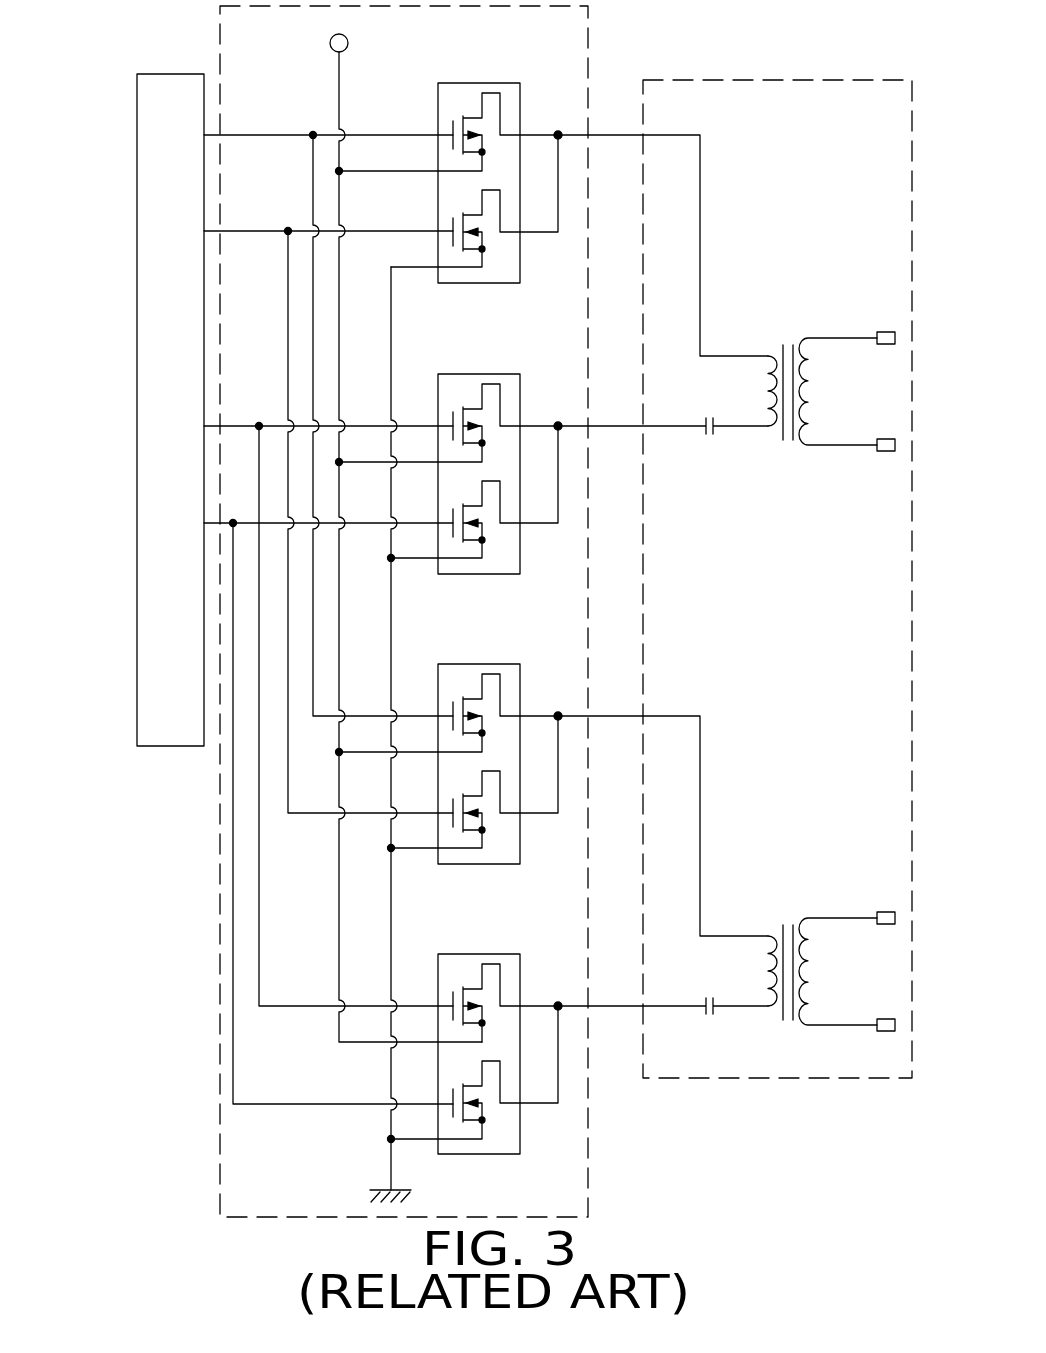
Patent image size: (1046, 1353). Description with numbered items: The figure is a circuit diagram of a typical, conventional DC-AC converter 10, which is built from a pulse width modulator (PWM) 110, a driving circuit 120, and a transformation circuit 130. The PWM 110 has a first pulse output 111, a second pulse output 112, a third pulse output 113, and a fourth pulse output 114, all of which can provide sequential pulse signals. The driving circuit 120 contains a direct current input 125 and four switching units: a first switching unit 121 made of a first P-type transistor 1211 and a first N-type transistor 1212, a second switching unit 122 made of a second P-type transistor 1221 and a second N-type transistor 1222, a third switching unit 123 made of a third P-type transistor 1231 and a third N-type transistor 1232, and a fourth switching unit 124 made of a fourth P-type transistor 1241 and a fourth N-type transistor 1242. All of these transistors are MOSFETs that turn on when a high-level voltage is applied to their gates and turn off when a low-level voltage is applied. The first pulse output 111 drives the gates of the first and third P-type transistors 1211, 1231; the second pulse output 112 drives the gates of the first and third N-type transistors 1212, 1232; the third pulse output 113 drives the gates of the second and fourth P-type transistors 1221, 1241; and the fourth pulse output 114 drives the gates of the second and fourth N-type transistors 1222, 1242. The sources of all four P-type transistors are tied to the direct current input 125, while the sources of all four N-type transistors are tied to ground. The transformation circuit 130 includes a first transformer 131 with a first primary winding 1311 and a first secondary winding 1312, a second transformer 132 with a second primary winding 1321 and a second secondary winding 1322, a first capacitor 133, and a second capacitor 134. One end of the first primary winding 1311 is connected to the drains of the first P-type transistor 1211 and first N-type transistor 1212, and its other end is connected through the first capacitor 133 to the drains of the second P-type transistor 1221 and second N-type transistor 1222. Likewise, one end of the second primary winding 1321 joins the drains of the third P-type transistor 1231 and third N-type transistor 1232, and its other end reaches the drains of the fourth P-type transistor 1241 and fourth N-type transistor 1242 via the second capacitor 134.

The DC-AC converter 10 is at (179, 31).
The pulse width modulator 110 is at (137, 78).
The first pulse output 111 is at (204, 135).
The second pulse output 112 is at (204, 231).
The third pulse output 113 is at (204, 426).
The fourth pulse output 114 is at (204, 523).
The driving circuit 120 is at (588, 36).
The first switching unit 121 is at (452, 194).
The first P-type transistor 1211 is at (455, 112).
The first N-type transistor 1212 is at (490, 257).
The second switching unit 122 is at (452, 457).
The second P-type transistor 1221 is at (505, 400).
The second N-type transistor 1222 is at (490, 548).
The third switching unit 123 is at (452, 747).
The third P-type transistor 1231 is at (505, 690).
The third N-type transistor 1232 is at (490, 838).
The fourth switching unit 124 is at (478, 1038).
The fourth P-type transistor 1241 is at (505, 980).
The fourth N-type transistor 1242 is at (490, 1130).
The direct current input 125 is at (330, 43).
The transformation circuit 130 is at (762, 80).
The first transformer 131 is at (790, 362).
The first primary winding 1311 is at (768, 365).
The first secondary winding 1312 is at (808, 347).
The second transformer 132 is at (785, 942).
The second primary winding 1321 is at (768, 945).
The second secondary winding 1322 is at (808, 927).
The first capacitor 133 is at (713, 434).
The second capacitor 134 is at (713, 1014).